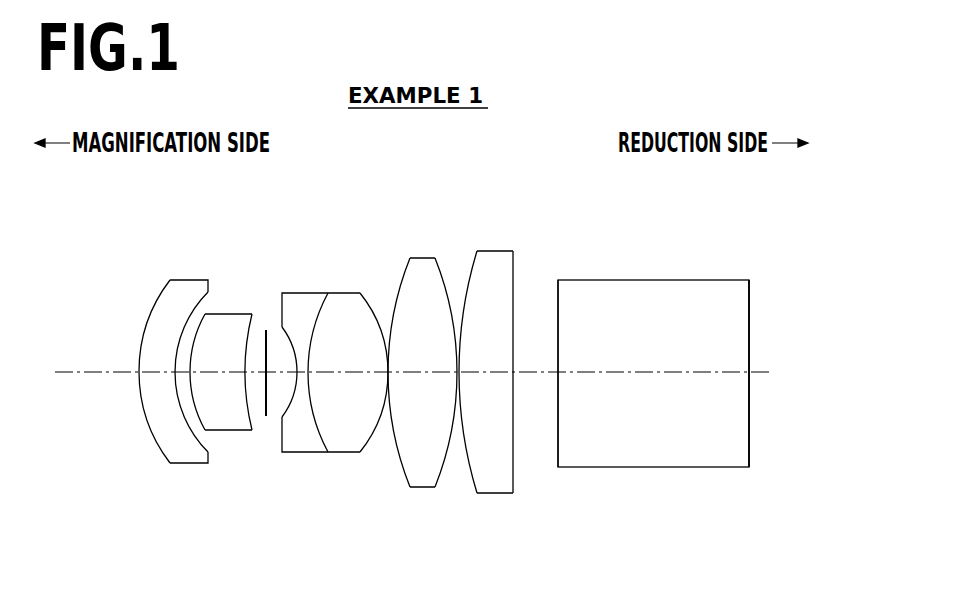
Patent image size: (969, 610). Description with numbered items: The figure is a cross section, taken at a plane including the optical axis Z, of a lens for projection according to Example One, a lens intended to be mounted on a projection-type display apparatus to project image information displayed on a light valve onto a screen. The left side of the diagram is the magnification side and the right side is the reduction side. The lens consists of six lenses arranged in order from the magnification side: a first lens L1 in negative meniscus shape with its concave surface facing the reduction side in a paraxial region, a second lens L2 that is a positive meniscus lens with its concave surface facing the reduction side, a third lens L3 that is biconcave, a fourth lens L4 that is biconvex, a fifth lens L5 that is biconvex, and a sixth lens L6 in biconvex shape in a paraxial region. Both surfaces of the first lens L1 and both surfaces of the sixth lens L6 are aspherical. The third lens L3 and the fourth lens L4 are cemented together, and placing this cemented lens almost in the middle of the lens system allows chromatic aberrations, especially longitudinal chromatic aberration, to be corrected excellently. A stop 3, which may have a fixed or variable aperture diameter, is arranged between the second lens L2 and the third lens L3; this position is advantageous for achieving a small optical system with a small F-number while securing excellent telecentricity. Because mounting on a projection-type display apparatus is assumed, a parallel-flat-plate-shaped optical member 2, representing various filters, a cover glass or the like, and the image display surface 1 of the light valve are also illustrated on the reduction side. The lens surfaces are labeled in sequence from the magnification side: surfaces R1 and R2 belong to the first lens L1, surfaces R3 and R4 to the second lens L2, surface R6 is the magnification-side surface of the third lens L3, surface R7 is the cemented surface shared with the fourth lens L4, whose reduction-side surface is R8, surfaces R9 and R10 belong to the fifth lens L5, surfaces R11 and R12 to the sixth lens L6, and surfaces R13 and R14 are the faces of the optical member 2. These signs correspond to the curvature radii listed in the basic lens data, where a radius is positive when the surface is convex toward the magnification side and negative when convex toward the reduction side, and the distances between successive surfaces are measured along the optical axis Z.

The image display surface 1 is at (749, 282).
The optical member 2 is at (668, 290).
The stop 3 is at (260, 328).
The optical axis Z is at (70, 370).
The first lens L1 is at (187, 288).
The second lens L2 is at (233, 320).
The third lens L3 is at (305, 292).
The fourth lens L4 is at (346, 292).
The fifth lens L5 is at (420, 265).
The sixth lens L6 is at (493, 262).
The first surface R1 is at (152, 440).
The second surface R2 is at (203, 442).
The third surface R3 is at (205, 423).
The fourth surface R4 is at (247, 410).
The sixth surface R6 is at (288, 410).
The seventh surface R7 is at (320, 440).
The eighth surface R8 is at (373, 443).
The ninth surface R9 is at (403, 468).
The tenth surface R10 is at (440, 474).
The eleventh surface R11 is at (475, 484).
The twelfth surface R12 is at (512, 470).
The thirteenth surface R13 is at (555, 450).
The fourteenth surface R14 is at (750, 450).